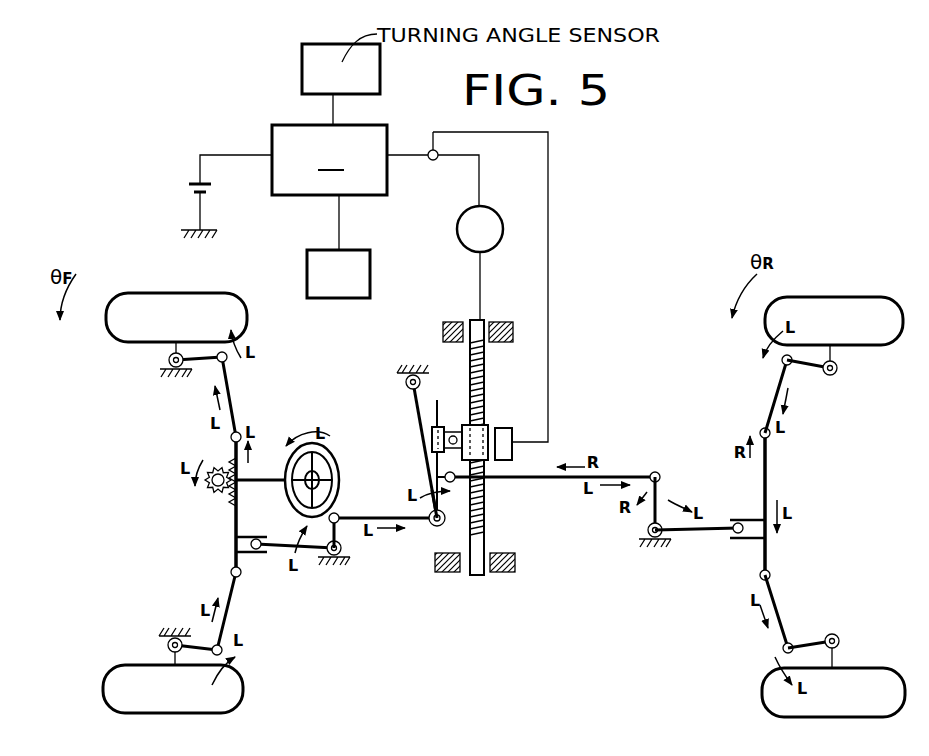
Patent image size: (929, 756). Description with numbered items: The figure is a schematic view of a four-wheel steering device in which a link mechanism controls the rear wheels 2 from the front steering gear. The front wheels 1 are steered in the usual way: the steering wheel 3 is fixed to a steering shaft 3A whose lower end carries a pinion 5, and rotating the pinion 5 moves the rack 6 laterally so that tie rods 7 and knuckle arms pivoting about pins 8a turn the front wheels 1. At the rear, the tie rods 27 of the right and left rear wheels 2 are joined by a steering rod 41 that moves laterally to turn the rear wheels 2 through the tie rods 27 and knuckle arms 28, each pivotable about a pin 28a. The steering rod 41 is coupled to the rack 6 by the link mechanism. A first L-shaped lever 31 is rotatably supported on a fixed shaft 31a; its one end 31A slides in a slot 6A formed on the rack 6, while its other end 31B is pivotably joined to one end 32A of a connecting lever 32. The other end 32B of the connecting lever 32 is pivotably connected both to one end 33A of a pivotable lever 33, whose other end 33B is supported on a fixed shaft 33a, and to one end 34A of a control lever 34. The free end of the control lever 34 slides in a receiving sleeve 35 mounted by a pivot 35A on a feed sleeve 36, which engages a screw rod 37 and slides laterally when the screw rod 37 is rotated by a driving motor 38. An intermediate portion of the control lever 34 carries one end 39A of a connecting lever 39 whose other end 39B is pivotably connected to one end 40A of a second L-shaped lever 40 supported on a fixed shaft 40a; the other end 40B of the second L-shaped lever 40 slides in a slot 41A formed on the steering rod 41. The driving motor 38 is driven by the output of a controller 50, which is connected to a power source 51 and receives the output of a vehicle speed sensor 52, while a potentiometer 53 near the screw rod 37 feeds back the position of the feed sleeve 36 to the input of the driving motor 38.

The front wheels 1 is at (140, 300).
The rear wheels 2 is at (876, 312).
The steering wheel 3 is at (333, 440).
The steering shaft 3A is at (265, 466).
The pinion 5 is at (217, 467).
The rack 6 is at (232, 519).
The slot 6A is at (250, 556).
The tie rods 7 is at (231, 396).
The pins 8a is at (165, 361).
The tie rod 27 is at (777, 390).
The knuckle arm 28 is at (815, 370).
The pin 28a is at (840, 370).
The first L-shaped lever 31 is at (307, 552).
The one end of first L-shaped lever 31A is at (258, 538).
The other end of first L-shaped lever 31B is at (342, 549).
The fixed shaft 31a is at (344, 562).
The connecting lever 32 is at (359, 517).
The one end of connecting lever 32A is at (345, 513).
The other end of connecting lever 32B is at (432, 527).
The pivotable lever 33 is at (421, 427).
The one end of pivotable lever 33A is at (446, 522).
The other end of pivotable lever 33B is at (407, 390).
The fixed shaft 33a is at (406, 378).
The control lever 34 is at (440, 400).
The one end of control lever 34A is at (446, 512).
The receiving sleeve 35 is at (481, 425).
The pivot 35A is at (472, 424).
The feed sleeve 36 is at (505, 428).
The screw rod 37 is at (487, 370).
The driving motor 38 is at (505, 217).
The connecting lever 39 is at (653, 473).
The one end of connecting lever 39A is at (456, 480).
The other end of connecting lever 39B is at (655, 470).
The second L-shaped lever 40 is at (692, 533).
The one end of second L-shaped lever 40A is at (661, 483).
The other end of second L-shaped lever 40B is at (737, 522).
The fixed shaft 40a is at (647, 538).
The steering rod 41 is at (769, 468).
The slot 41A is at (742, 534).
The controller 50 is at (375, 165).
The power source 51 is at (185, 190).
The vehicle speed sensor 52 is at (338, 246).
The potentiometer 53 is at (513, 446).